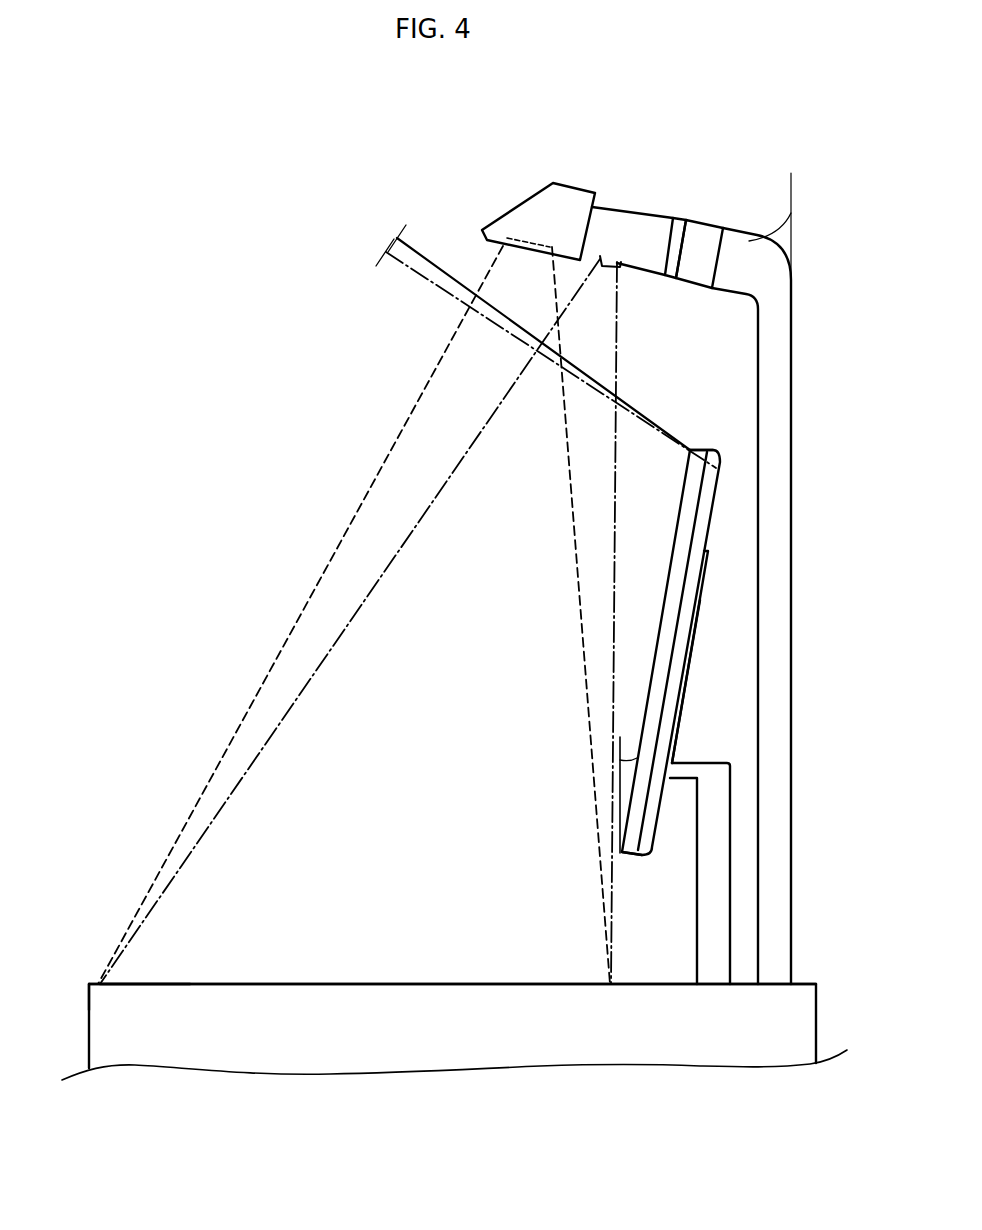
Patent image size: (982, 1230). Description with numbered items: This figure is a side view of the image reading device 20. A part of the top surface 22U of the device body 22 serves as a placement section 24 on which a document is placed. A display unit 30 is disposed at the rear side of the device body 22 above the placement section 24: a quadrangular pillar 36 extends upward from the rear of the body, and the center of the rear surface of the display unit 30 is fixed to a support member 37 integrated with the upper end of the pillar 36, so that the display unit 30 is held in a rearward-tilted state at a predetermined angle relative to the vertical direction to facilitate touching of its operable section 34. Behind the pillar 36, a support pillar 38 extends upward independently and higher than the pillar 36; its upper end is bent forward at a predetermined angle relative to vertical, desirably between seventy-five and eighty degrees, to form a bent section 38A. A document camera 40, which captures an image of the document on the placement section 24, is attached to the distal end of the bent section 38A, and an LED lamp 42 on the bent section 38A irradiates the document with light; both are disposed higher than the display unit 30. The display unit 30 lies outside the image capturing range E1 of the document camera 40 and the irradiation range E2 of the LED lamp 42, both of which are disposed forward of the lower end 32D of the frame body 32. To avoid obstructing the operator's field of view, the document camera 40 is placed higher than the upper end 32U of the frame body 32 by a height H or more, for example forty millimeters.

The image reading device 20 is at (86, 981).
The device body 22 is at (798, 1015).
The top surface 22U is at (800, 983).
The placement section 24 is at (183, 983).
The display unit 30 is at (737, 753).
The frame body 32 is at (675, 582).
The upper end 32U is at (690, 453).
The lower end 32D is at (622, 858).
The operable section 34 is at (675, 553).
The pillar 36 is at (697, 943).
The support member 37 is at (688, 713).
The support pillar 38 is at (773, 727).
The bent section 38A is at (645, 230).
The document camera 40 is at (570, 197).
The LED lamp 42 is at (607, 267).
The image capturing range E1 is at (262, 688).
The irradiation range E2 is at (378, 583).
The height H is at (393, 237).